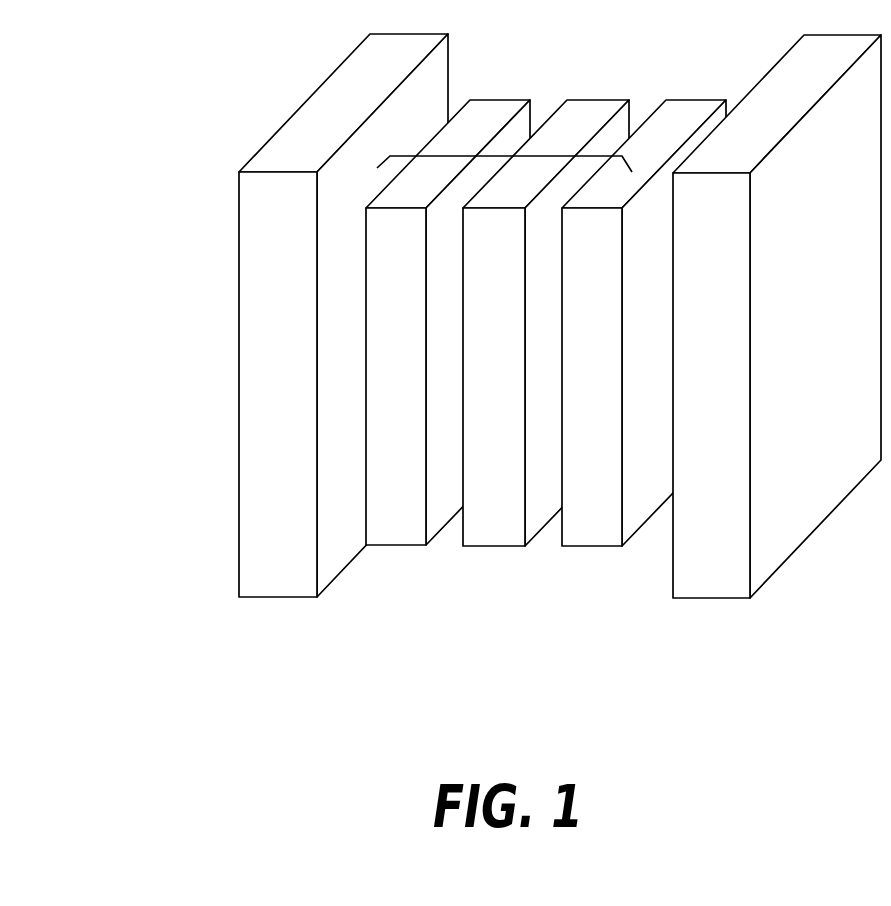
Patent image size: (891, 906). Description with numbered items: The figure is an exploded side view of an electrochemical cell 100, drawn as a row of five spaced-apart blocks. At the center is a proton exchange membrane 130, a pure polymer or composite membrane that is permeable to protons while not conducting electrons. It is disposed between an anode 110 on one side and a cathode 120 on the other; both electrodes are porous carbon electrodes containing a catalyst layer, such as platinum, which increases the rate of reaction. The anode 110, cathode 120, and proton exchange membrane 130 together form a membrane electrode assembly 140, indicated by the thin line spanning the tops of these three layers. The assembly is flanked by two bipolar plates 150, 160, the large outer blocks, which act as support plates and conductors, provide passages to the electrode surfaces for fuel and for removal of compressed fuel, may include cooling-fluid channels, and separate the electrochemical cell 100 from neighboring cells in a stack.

The electrochemical cell 100 is at (486, 363).
The anode 110 is at (385, 545).
The cathode 120 is at (587, 546).
The proton exchange membrane 130 is at (487, 546).
The membrane electrode assembly 140 is at (515, 155).
The bipolar plate 150 is at (272, 597).
The bipolar plate 160 is at (700, 598).